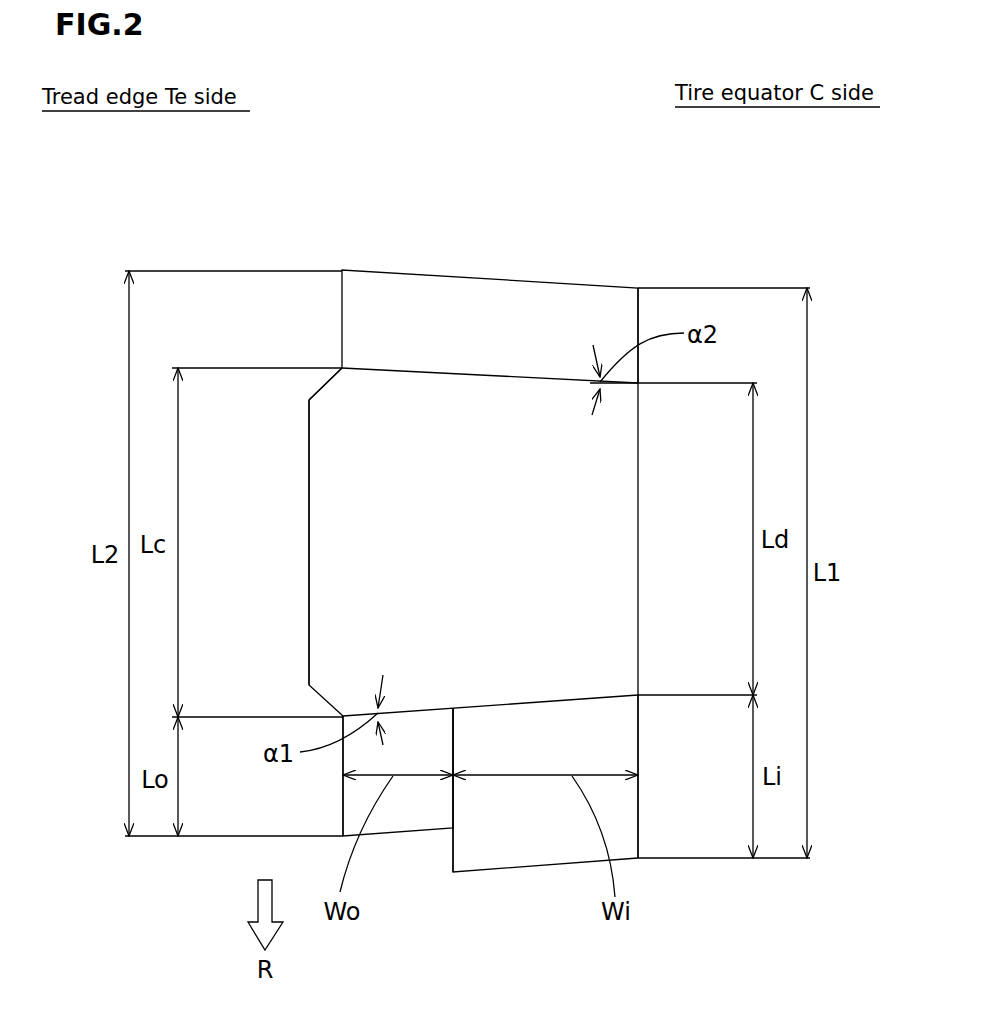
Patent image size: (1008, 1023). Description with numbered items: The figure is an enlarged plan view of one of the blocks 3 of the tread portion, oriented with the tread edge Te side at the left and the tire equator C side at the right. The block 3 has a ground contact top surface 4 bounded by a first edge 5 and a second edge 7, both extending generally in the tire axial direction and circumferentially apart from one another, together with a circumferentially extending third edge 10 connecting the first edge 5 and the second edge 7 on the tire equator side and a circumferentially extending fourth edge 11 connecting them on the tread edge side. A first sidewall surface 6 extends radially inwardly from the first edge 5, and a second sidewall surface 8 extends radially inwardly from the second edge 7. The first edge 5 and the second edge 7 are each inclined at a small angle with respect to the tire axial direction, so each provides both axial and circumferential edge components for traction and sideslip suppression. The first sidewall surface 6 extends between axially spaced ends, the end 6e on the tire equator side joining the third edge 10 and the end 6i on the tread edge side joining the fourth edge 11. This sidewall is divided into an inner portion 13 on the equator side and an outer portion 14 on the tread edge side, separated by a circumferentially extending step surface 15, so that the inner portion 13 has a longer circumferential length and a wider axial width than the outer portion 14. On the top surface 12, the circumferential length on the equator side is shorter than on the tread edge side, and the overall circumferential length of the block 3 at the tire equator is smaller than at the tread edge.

The block 3 is at (335, 203).
The ground contact top surface 4 is at (472, 573).
The first edge 5 is at (563, 702).
The first sidewall surface 6 is at (488, 849).
The end on the tread edge side 6i is at (343, 806).
The end on the tire equator side 6e is at (639, 808).
The second edge 7 is at (490, 375).
The second sidewall surface 8 is at (431, 310).
The third edge 10 is at (639, 588).
The fourth edge 11 is at (309, 541).
The top surface 12 is at (375, 478).
The inner portion 13 is at (545, 834).
The outer portion 14 is at (418, 812).
The step surface 15 is at (453, 812).